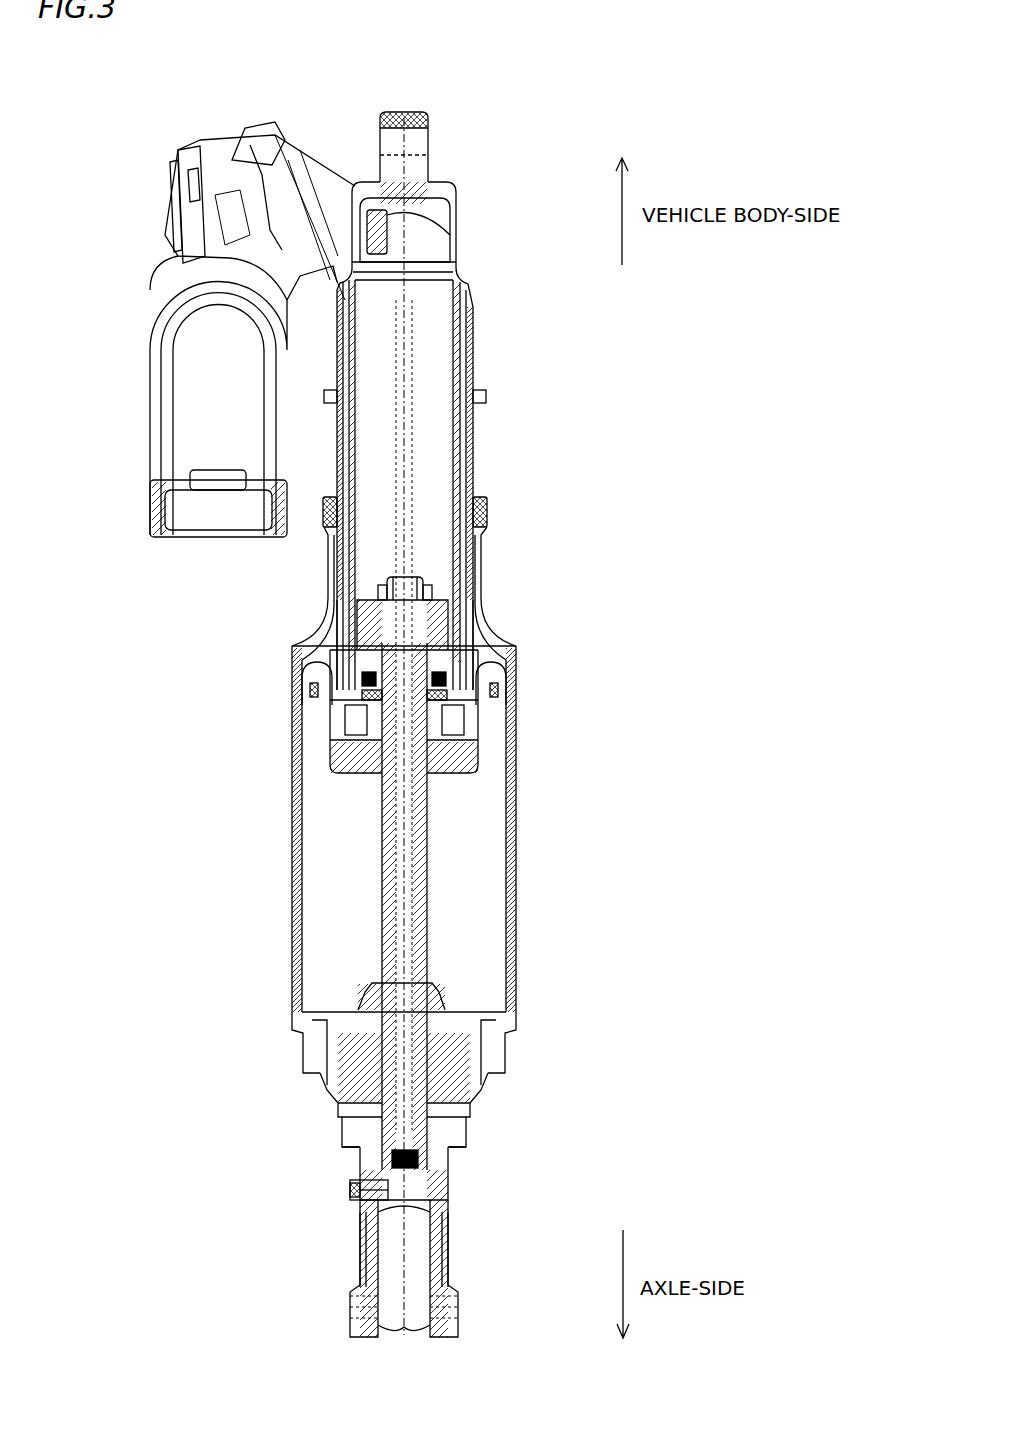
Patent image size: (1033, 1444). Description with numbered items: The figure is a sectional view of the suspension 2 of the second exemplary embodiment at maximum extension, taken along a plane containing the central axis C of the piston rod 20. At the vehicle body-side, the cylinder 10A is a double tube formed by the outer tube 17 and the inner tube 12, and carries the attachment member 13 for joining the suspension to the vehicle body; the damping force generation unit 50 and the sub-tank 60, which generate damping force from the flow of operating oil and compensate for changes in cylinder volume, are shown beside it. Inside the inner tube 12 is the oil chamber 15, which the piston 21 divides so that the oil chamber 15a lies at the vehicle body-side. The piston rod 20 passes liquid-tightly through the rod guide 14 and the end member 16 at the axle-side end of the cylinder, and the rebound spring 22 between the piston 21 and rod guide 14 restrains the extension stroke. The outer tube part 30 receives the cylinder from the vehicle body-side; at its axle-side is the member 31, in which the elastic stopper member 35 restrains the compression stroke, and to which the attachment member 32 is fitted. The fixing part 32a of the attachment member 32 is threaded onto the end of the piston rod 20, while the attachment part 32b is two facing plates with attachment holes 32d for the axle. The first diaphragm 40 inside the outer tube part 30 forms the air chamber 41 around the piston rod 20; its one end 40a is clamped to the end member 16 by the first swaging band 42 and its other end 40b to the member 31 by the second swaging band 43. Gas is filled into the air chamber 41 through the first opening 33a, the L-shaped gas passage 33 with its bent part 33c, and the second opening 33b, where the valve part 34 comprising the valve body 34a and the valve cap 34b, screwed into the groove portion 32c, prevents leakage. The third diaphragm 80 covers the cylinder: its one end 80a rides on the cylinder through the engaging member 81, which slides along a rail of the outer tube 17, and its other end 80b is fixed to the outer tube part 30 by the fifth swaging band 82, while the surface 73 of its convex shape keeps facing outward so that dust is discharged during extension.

The suspension 2 is at (515, 143).
The central axis C is at (405, 234).
The cylinder 10A is at (456, 436).
The inner tube 12 is at (462, 386).
The attachment member 13 is at (404, 112).
The rod guide 14 is at (362, 713).
The oil chamber 15 is at (505, 715).
The oil chamber at the vehicle body-side 15a is at (440, 452).
The end member 16 is at (470, 766).
The outer tube 17 is at (474, 350).
The piston rod 20 is at (428, 832).
The piston 21 is at (452, 610).
The rebound spring 22 is at (373, 683).
The outer tube part 30 is at (513, 876).
The member 31 is at (332, 1106).
The attachment member 32 is at (426, 1257).
The fixing part 32a is at (450, 1152).
The attachment part 32b is at (363, 1267).
The groove portion 32c is at (395, 1217).
The attachment holes 32d is at (414, 1328).
The gas passage 33 is at (412, 1242).
The first opening 33a is at (447, 1120).
The second opening 33b is at (358, 1212).
The bent part 33c is at (448, 1198).
The valve part 34 is at (329, 1169).
The valve body 34a is at (365, 1168).
The valve cap 34b is at (352, 1190).
The stopper member 35 is at (372, 995).
The first diaphragm 40 is at (449, 829).
The one end of the first diaphragm 40a is at (454, 683).
The other end of the first diaphragm 40b is at (452, 1057).
The air chamber 41 is at (497, 963).
The first swaging band 42 is at (482, 690).
The second swaging band 43 is at (508, 1043).
The damping force generation unit 50 is at (168, 175).
The sub-tank 60 is at (161, 545).
The surface 73 is at (481, 592).
The third diaphragm 80 is at (457, 585).
The one end of the third diaphragm 80a is at (455, 512).
The other end of the third diaphragm 80b is at (457, 659).
The engaging member 81 is at (487, 515).
The fifth swaging band 82 is at (518, 655).